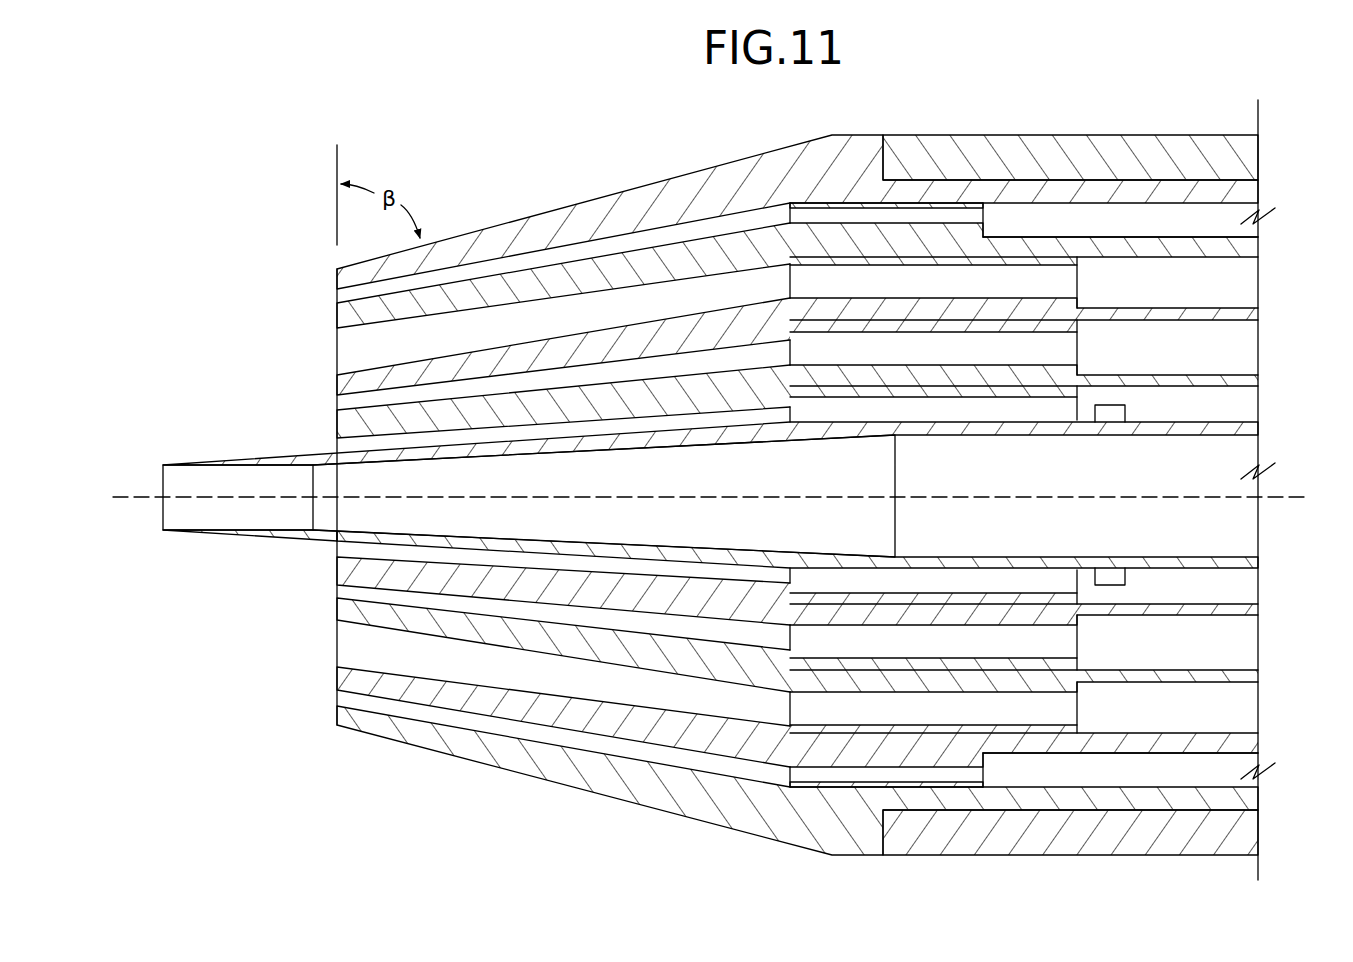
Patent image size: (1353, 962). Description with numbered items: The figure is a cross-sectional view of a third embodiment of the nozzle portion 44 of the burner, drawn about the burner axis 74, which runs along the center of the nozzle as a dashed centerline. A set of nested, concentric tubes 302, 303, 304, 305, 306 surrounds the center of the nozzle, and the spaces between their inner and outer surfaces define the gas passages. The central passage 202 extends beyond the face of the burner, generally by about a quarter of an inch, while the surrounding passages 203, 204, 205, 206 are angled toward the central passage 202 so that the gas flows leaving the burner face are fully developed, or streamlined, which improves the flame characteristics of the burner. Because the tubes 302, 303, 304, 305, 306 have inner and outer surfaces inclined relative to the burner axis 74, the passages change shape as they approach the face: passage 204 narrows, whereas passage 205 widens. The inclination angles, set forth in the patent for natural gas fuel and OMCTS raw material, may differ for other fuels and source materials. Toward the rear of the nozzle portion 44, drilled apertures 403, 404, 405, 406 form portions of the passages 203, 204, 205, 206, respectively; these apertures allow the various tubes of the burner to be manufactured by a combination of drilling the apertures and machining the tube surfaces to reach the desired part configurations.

The nozzle portion of burner 44 is at (518, 184).
The burner axis 74 is at (1292, 500).
The passage 202 is at (178, 510).
The passage 203 is at (352, 446).
The passage 204 is at (352, 406).
The passage 205 is at (352, 353).
The passage 206 is at (352, 292).
The tube 302 is at (290, 533).
The tube 303 is at (352, 572).
The tube 304 is at (352, 610).
The tube 305 is at (352, 673).
The tube 306 is at (352, 727).
The drilled aperture 403 is at (1060, 410).
The drilled aperture 404 is at (1055, 347).
The drilled aperture 405 is at (1055, 290).
The drilled aperture 406 is at (972, 215).